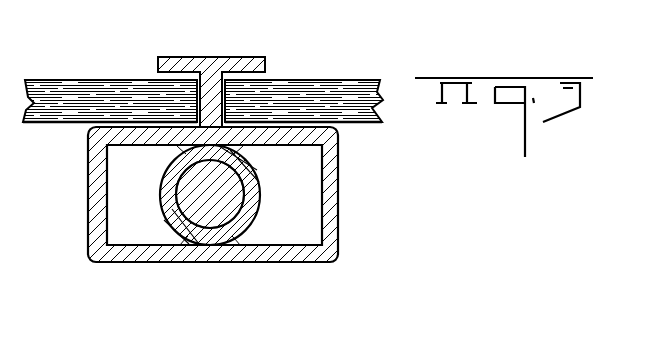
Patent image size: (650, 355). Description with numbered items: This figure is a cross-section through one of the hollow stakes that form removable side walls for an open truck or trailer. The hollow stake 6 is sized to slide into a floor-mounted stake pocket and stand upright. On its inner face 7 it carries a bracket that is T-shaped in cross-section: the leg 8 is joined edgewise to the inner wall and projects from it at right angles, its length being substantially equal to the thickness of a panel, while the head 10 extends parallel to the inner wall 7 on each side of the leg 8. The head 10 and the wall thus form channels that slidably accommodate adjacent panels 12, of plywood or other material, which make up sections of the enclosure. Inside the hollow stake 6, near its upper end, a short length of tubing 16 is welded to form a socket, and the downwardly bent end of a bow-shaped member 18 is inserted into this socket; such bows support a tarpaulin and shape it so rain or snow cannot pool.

The stake 6 is at (298, 253).
The inner face 7 is at (298, 122).
The leg 8 is at (212, 104).
The head 10 is at (223, 62).
The panel 12 is at (82, 107).
The tubing 16 is at (205, 233).
The bow-shaped member 18 is at (228, 190).